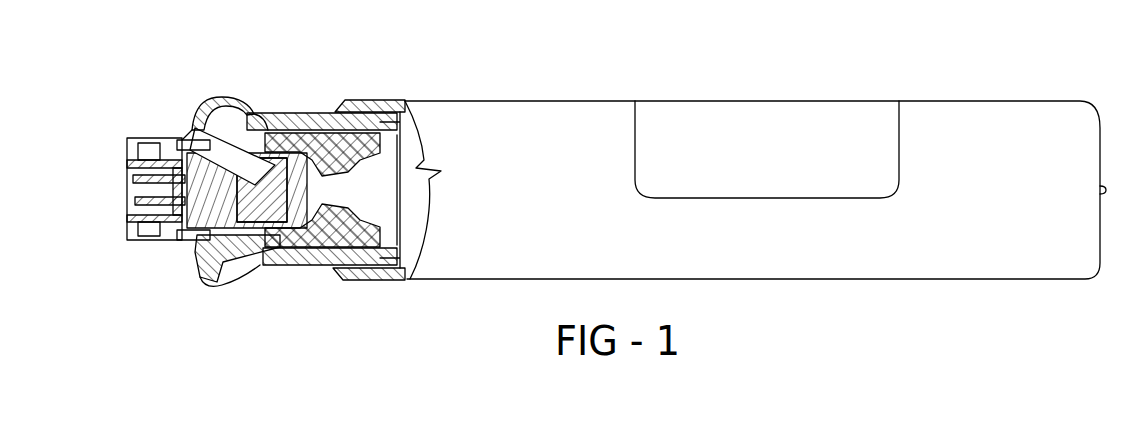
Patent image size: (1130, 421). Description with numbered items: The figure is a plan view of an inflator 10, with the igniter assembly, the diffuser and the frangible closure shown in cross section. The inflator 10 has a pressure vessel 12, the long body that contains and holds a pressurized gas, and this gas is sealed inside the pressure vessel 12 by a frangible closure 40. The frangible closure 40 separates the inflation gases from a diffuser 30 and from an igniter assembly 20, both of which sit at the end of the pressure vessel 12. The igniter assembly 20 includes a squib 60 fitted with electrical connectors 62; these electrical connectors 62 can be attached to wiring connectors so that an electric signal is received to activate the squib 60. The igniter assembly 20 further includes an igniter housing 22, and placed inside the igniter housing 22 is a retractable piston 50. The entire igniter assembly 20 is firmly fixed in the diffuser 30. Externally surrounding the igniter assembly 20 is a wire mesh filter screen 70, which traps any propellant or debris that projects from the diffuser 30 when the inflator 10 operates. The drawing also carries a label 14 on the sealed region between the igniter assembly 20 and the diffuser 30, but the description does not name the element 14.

The inflator 10 is at (962, 126).
The pressure vessel 12 is at (462, 248).
The seal 14 is at (338, 115).
The igniter assembly 20 is at (210, 215).
The igniter housing 22 is at (210, 122).
The diffuser 30 is at (233, 103).
The frangible closure 40 is at (343, 100).
The retractable piston 50 is at (305, 130).
The squib 60 is at (195, 160).
The electrical connectors 62 is at (132, 182).
The wire mesh filter screen 70 is at (310, 248).